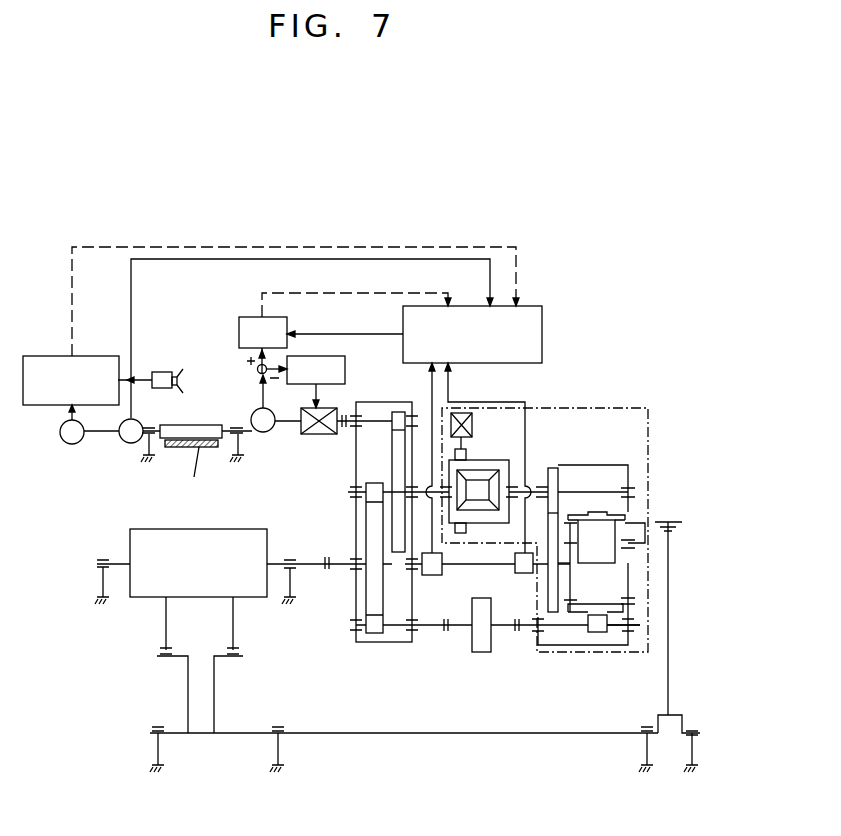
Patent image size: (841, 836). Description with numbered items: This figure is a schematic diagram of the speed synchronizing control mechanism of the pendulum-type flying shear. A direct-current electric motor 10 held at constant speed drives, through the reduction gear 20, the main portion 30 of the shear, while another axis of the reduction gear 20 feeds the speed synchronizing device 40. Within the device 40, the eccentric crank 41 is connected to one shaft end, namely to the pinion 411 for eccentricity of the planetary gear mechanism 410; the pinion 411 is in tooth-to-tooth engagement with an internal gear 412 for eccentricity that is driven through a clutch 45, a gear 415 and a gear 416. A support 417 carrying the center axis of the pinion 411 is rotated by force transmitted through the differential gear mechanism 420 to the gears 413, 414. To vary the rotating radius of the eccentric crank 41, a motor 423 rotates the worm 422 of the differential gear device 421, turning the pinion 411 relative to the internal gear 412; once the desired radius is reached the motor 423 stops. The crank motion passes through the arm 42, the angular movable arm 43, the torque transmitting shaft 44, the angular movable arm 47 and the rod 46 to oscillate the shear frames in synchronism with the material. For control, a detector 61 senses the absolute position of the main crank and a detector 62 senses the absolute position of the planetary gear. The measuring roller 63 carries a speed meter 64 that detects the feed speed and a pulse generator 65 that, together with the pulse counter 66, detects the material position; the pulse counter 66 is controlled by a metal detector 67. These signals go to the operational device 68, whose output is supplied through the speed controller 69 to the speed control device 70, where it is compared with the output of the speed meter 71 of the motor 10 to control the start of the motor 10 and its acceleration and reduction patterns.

The pulse counter 66 is at (50, 356).
The pulse generator 65 is at (72, 444).
The speed meter 64 is at (131, 443).
The metal detector 67 is at (161, 372).
The measuring roller 63 is at (202, 425).
The speed meter 71 is at (254, 411).
The direct-current electric motor 10 is at (301, 408).
The speed controller 69 is at (285, 318).
The speed control device 70 is at (336, 357).
The operational device 68 is at (542, 335).
The speed synchronizing device 40 is at (625, 372).
The motor 423 is at (462, 413).
The differential gear mechanism 420 is at (516, 445).
The differential gear device 421 is at (477, 505).
The worm 422 is at (458, 533).
The detector 61 is at (430, 576).
The detector 62 is at (515, 565).
The planetary gear mechanism 410 is at (573, 447).
The gear 413 is at (560, 476).
The pinion 411 is at (605, 542).
The eccentric crank 41 is at (658, 530).
The support 417 is at (630, 588).
The internal gear 412 is at (596, 604).
The gear 414 is at (548, 591).
The gear 415 is at (620, 614).
The gear 416 is at (593, 633).
The arm 42 is at (668, 650).
The angular movable arm 43 is at (684, 718).
The torque transmitting shaft 44 is at (466, 733).
The clutch 45 is at (482, 652).
The rod 46 is at (236, 623).
The angular movable arm 47 is at (214, 697).
The main portion 30 is at (224, 529).
The reduction gear 20 is at (372, 644).